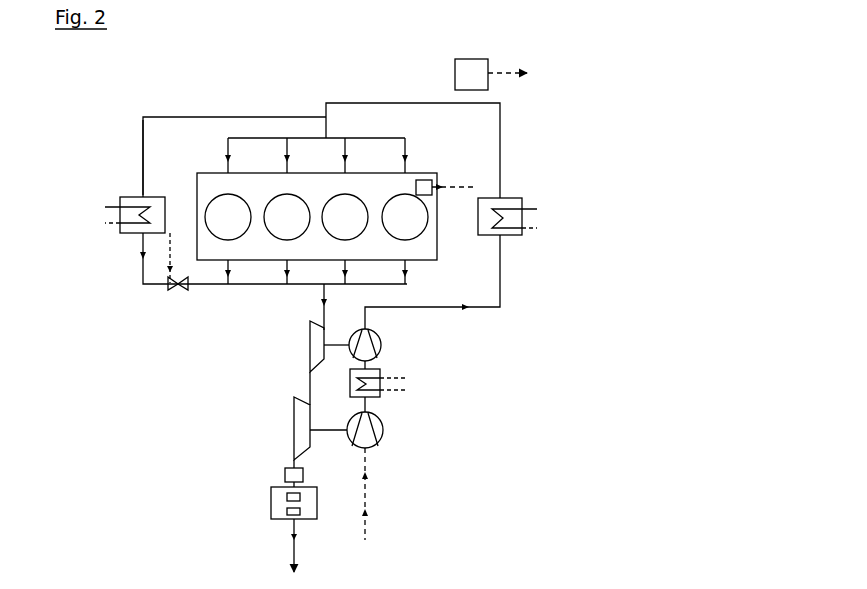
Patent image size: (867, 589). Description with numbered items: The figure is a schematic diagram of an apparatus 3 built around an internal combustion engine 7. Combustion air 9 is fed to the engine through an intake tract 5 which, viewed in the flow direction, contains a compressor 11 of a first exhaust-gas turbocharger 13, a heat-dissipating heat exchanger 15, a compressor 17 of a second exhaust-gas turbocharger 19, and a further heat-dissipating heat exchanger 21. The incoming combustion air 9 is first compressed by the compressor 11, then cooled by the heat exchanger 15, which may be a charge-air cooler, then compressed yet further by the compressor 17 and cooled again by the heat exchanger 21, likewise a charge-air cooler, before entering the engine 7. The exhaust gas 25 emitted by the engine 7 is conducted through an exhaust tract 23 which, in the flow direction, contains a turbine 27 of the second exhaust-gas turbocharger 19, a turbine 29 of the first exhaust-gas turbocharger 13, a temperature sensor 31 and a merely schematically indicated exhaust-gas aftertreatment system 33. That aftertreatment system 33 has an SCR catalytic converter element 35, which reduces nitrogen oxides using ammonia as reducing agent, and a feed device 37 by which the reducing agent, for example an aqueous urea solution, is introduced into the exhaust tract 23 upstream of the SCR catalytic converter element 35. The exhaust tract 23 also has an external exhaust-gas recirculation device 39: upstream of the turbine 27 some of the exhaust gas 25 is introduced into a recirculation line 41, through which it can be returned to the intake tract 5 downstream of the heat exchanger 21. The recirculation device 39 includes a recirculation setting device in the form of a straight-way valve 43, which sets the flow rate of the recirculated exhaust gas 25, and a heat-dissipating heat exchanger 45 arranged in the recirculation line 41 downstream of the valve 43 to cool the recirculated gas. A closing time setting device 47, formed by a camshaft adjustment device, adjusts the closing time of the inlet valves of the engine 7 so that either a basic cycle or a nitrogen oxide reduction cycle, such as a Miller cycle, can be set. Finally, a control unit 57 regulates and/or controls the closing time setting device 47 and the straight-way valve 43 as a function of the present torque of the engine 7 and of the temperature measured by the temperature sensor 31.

The apparatus 3 is at (564, 94).
The intake tract 5 is at (470, 454).
The internal combustion engine 7 is at (423, 246).
The combustion air 9 is at (359, 102).
The compressor 11 is at (384, 430).
The first exhaust-gas turbocharger 13 is at (414, 409).
The heat-dissipating heat exchanger 15 is at (349, 387).
The compressor 17 is at (379, 335).
The second exhaust-gas turbocharger 19 is at (271, 341).
The heat-dissipating heat exchanger 21 is at (507, 200).
The exhaust tract 23 is at (174, 424).
The exhaust gas 25 is at (233, 116).
The turbine 27 is at (312, 350).
The turbine 29 is at (300, 430).
The temperature sensor 31 is at (285, 476).
The exhaust-gas aftertreatment system 33 is at (276, 508).
The SCR catalytic converter element 35 is at (303, 512).
The feed device 37 is at (300, 497).
The external exhaust-gas recirculation device 39 is at (96, 141).
The recirculation line 41 is at (142, 178).
The straight-way valve 43 is at (176, 291).
The heat-dissipating heat exchanger 45 is at (150, 197).
The closing time setting device 47 is at (425, 178).
The control unit 57 is at (471, 68).